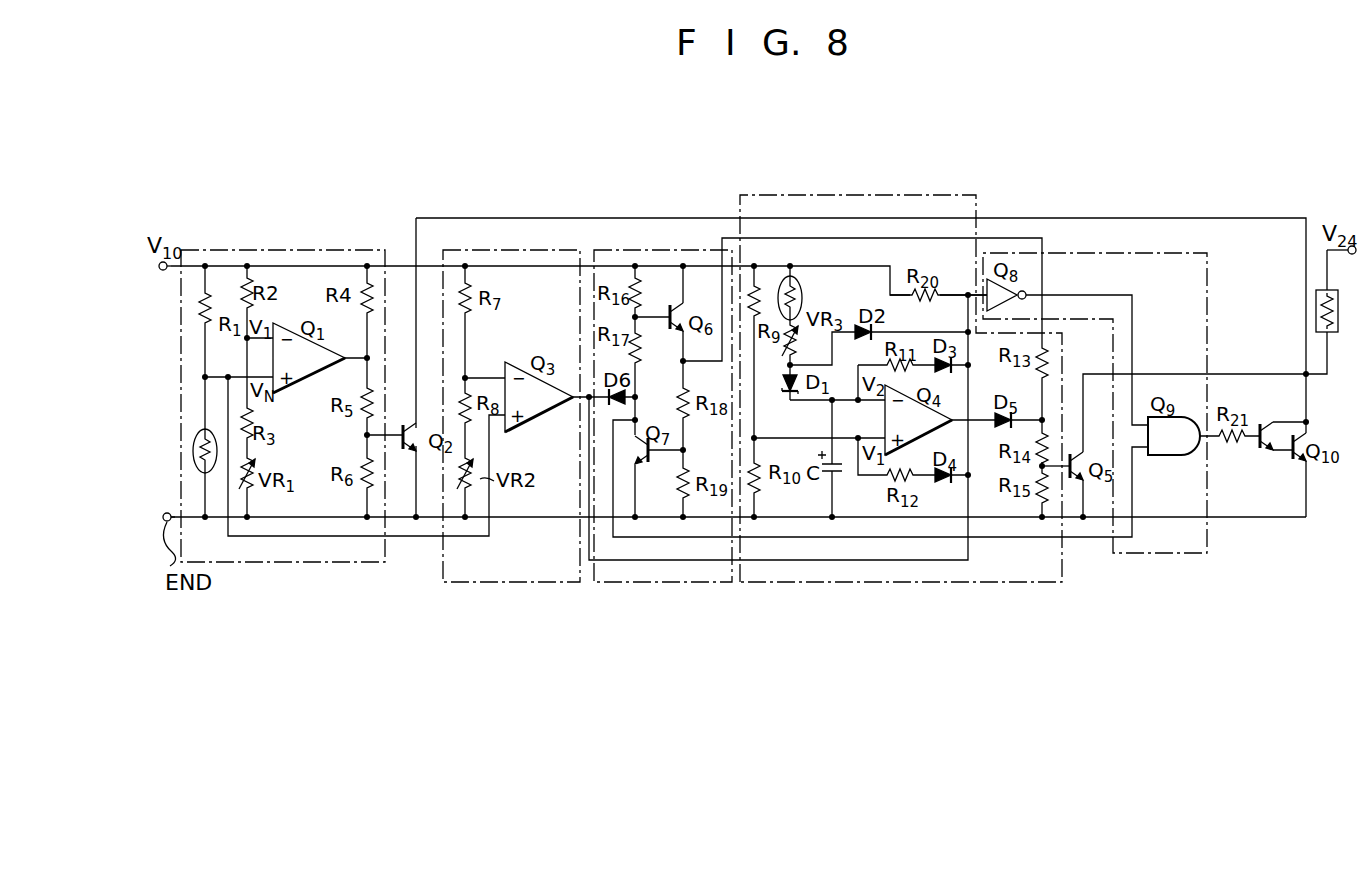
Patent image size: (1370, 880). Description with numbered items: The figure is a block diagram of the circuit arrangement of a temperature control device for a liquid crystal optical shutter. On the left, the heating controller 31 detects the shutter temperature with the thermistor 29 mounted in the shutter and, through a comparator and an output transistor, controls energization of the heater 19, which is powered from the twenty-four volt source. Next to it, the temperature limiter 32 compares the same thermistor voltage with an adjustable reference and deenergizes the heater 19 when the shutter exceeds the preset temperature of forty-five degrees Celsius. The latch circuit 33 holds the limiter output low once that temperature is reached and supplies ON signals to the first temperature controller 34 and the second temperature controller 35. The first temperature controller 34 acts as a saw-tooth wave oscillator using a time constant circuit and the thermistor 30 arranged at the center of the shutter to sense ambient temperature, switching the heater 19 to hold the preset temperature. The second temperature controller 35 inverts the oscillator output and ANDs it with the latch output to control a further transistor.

The heater 19 is at (1336, 332).
The thermistor 29 is at (193, 452).
The thermistor 30 is at (801, 298).
The heating controller 31 is at (286, 250).
The temperature limiter 32 is at (522, 582).
The latch circuit 33 is at (640, 250).
The first temperature controller 34 is at (850, 195).
The second temperature controller 35 is at (1207, 318).